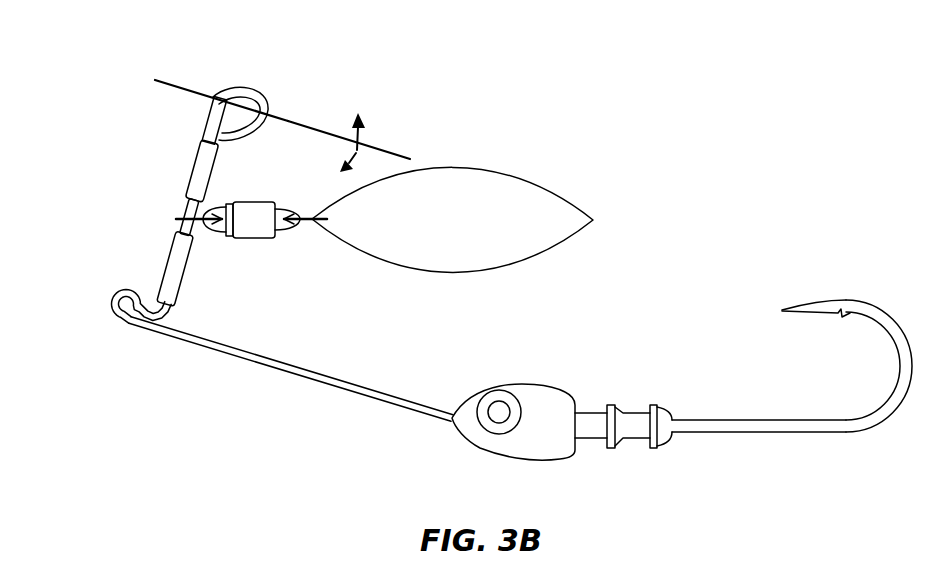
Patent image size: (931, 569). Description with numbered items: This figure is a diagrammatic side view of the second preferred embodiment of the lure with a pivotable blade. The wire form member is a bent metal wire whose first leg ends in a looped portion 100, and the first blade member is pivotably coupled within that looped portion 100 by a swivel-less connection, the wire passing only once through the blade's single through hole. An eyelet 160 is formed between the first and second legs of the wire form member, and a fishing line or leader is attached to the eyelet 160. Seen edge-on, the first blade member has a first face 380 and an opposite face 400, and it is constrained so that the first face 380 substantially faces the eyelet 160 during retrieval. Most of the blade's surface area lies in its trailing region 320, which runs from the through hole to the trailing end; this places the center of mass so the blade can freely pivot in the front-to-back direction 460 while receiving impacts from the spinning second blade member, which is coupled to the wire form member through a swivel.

The looped portion 100 is at (257, 86).
The eyelet 160 is at (122, 308).
The trailing region 320 is at (361, 107).
The first face 380 is at (195, 115).
The opposite face 400 is at (206, 72).
The front-to-back direction 460 is at (353, 152).